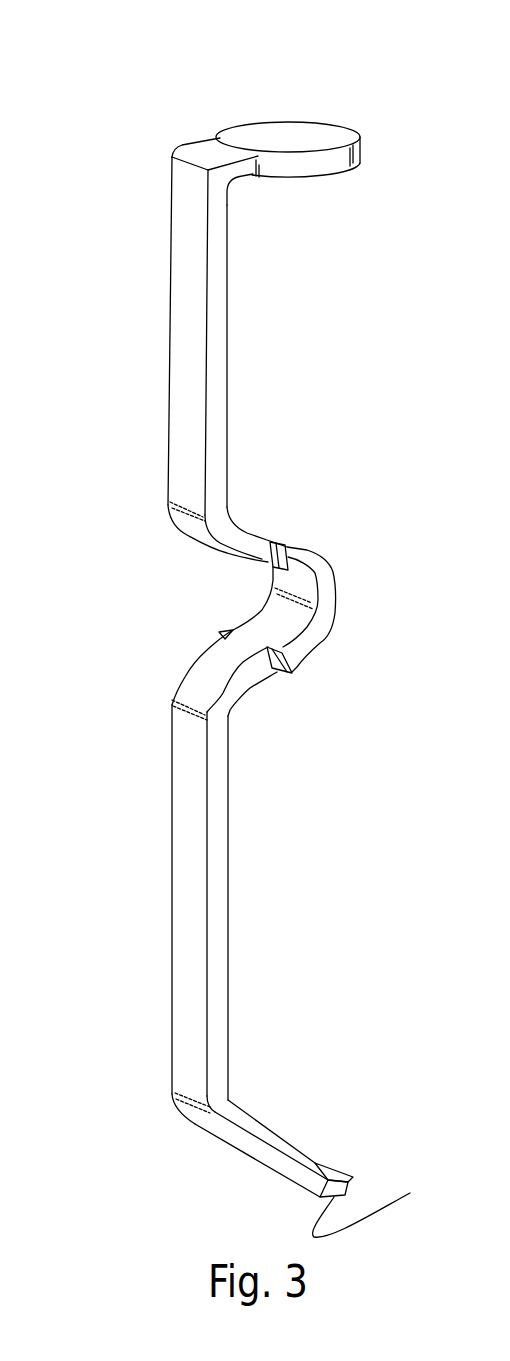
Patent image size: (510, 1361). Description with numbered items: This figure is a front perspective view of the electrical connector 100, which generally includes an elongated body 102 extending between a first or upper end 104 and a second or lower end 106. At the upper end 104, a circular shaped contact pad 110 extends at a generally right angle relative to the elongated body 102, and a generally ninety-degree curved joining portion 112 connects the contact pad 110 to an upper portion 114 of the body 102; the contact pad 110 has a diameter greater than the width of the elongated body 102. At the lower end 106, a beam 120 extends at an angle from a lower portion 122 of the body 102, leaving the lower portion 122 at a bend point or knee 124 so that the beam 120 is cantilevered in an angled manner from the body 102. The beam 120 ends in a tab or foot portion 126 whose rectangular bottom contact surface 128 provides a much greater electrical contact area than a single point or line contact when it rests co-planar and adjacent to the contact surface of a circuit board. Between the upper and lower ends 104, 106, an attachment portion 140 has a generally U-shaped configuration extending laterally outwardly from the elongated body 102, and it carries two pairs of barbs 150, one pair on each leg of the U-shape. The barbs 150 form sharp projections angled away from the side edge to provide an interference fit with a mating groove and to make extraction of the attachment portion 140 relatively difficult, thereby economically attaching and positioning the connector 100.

The electrical connector 100 is at (128, 86).
The elongated body 102 is at (213, 352).
The upper end 104 is at (211, 98).
The lower end 106 is at (225, 1175).
The contact pad 110 is at (282, 130).
The curved joining portion 112 is at (218, 177).
The upper portion 114 is at (190, 213).
The beam 120 is at (260, 1142).
The lower portion 122 is at (172, 1050).
The knee 124 is at (221, 1104).
The foot portion 126 is at (329, 1163).
The rectangular bottom contact surface 128 is at (384, 1204).
The attachment portion 140 is at (332, 500).
The barbs 150 is at (288, 555).